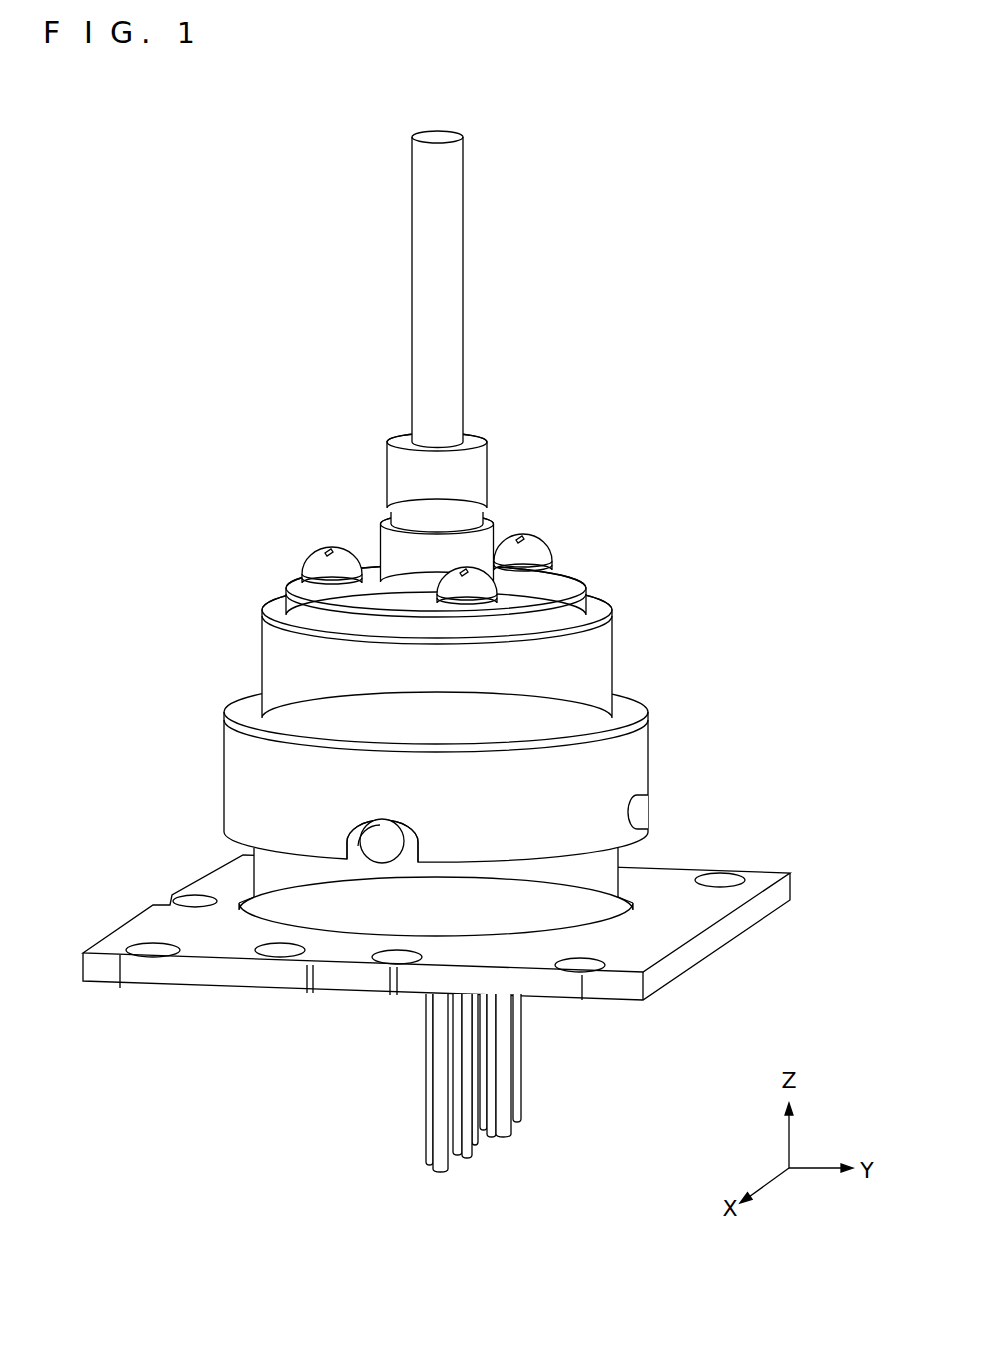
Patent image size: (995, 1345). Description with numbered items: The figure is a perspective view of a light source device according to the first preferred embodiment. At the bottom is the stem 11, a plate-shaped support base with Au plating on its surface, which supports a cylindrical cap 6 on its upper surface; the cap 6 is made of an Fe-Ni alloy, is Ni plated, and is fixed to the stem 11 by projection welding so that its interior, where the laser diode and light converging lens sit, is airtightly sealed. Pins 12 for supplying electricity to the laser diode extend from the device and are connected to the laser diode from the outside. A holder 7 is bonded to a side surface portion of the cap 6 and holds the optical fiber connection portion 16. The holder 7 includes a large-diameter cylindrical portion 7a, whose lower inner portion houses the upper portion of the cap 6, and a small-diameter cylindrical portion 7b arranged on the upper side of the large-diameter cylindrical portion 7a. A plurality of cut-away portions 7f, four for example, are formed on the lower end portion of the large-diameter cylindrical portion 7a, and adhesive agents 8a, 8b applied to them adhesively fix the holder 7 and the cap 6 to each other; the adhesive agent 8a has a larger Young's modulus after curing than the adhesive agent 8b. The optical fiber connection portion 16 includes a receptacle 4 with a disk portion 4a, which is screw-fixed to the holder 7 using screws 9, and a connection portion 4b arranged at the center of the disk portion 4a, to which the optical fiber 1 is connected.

The optical fiber 1 is at (452, 179).
The receptacle 4 is at (434, 507).
The disk portion 4a is at (567, 585).
The connection portion 4b is at (470, 474).
The cap 6 is at (283, 877).
The holder 7 is at (437, 815).
The large-diameter cylindrical portion 7a is at (437, 771).
The small-diameter cylindrical portion 7b is at (280, 673).
The cut-away portion 7f is at (347, 838).
The adhesive agent 8a is at (378, 846).
The adhesive agent 8b is at (640, 812).
The screw 9 is at (317, 558).
The stem 11 is at (675, 928).
The pin 12 is at (505, 1083).
The optical fiber connection portion 16 is at (436, 525).